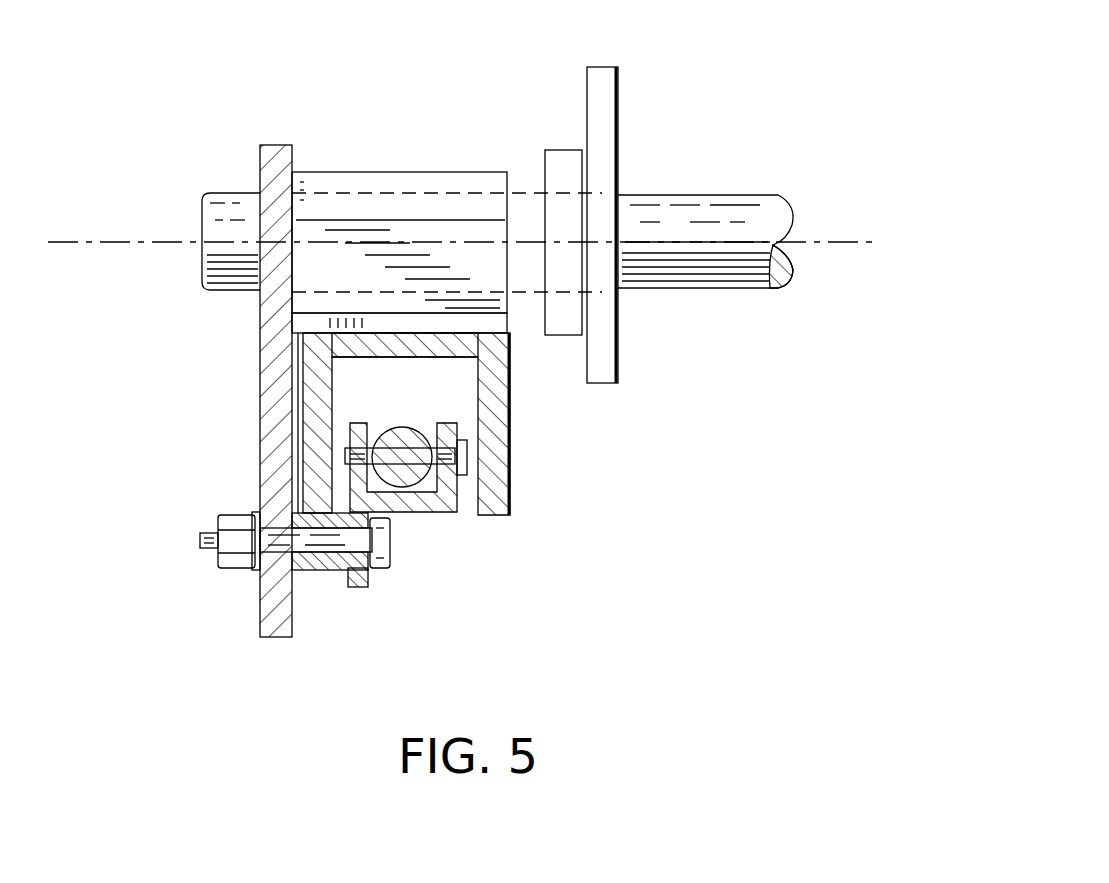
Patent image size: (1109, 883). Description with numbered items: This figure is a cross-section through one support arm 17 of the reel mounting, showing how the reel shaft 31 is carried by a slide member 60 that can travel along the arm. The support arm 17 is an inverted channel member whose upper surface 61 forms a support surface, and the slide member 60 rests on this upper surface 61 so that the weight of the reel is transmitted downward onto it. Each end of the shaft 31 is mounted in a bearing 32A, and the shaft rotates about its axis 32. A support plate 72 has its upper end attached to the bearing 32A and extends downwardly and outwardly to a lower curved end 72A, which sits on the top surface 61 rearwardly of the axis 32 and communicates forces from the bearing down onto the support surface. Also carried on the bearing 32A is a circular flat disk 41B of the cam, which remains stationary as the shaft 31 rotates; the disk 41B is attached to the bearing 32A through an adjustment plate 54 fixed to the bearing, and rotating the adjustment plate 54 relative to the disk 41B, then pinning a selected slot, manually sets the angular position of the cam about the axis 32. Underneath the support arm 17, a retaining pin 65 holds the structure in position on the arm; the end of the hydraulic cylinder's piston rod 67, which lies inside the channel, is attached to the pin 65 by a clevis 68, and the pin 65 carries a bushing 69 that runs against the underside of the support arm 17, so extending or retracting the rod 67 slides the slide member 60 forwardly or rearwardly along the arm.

The support arm 17 is at (513, 430).
The shaft 31 is at (225, 190).
The axis 32 is at (121, 241).
The bearing 32A is at (404, 170).
The flat disk 41B is at (601, 64).
The adjustment plate 54 is at (565, 148).
The slide member 60 is at (257, 399).
The upper surface 61 is at (420, 333).
The retaining pin 65 is at (199, 529).
The piston rod 67 is at (398, 424).
The clevis 68 is at (429, 520).
The bushing 69 is at (325, 575).
The support plate 72 is at (441, 237).
The lower curved end 72A is at (392, 322).